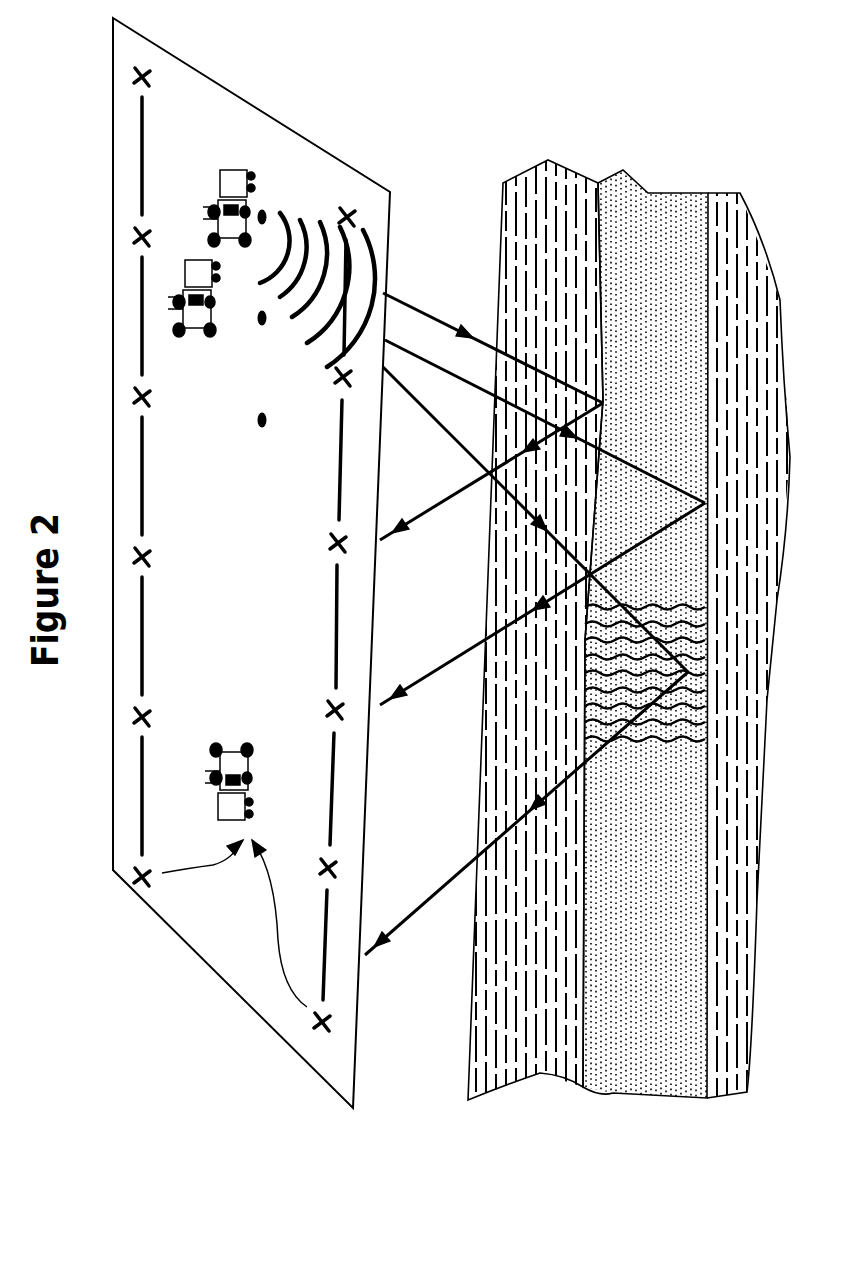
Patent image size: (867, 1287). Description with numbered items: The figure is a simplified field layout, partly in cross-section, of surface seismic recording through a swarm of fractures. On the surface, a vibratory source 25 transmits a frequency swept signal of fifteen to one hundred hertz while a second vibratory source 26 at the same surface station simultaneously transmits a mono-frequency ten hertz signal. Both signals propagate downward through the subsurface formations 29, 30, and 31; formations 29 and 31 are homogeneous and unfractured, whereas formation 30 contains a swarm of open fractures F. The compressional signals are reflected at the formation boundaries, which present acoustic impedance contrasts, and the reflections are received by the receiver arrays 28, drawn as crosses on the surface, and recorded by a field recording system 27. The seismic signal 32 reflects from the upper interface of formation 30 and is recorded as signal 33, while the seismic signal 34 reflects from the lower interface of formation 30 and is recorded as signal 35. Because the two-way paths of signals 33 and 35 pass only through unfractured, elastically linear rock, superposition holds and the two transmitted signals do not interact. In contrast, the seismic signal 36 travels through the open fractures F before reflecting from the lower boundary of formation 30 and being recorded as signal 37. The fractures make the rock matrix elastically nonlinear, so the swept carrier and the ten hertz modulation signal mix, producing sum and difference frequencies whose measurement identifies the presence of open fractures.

The surface vibratory source 25 is at (185, 291).
The surface vibratory source 26 is at (220, 196).
The field recording system 27 is at (234, 875).
The receiver arrays 28 is at (251, 563).
The subsurface formation 29 is at (535, 630).
The subsurface formation 30 is at (645, 635).
The subsurface formation 31 is at (748, 645).
The seismic signal 32 is at (493, 342).
The recorded signal 33 is at (491, 471).
The seismic signal 34 is at (545, 421).
The recorded signal 35 is at (542, 604).
The seismic signal 36 is at (535, 519).
The recorded signal 37 is at (526, 813).
The open fractures F is at (700, 720).